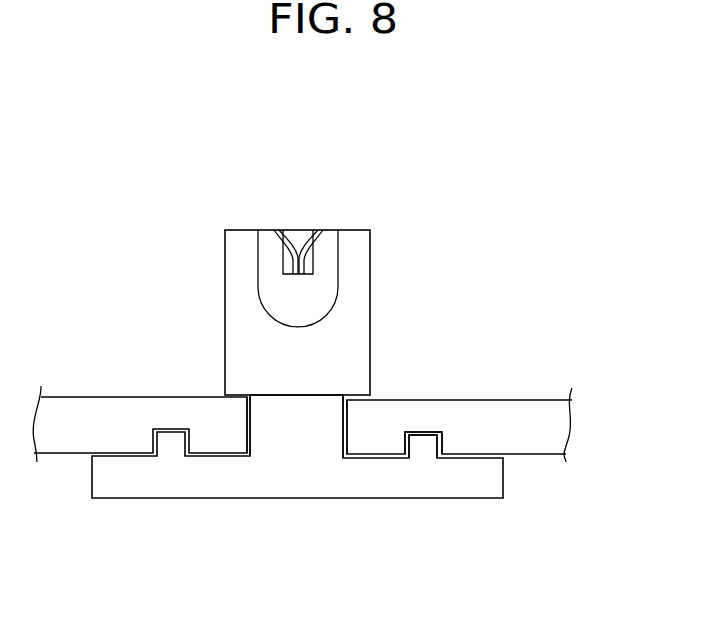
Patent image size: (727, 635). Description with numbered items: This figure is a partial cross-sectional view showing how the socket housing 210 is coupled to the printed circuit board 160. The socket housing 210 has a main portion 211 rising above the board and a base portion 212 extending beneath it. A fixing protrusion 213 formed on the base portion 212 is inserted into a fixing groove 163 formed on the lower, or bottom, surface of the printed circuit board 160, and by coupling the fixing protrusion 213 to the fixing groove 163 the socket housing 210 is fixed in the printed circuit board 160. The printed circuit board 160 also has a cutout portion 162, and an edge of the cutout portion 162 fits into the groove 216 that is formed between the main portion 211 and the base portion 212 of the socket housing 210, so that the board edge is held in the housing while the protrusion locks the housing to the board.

The socket housing 210 is at (349, 308).
The main portion 211 is at (370, 348).
The base portion 212 is at (297, 482).
The fixing protrusion 213 is at (422, 448).
The printed circuit board 160 is at (553, 427).
The cutout portion 162 is at (346, 427).
The fixing groove 163 is at (423, 432).
The groove 216 is at (250, 427).